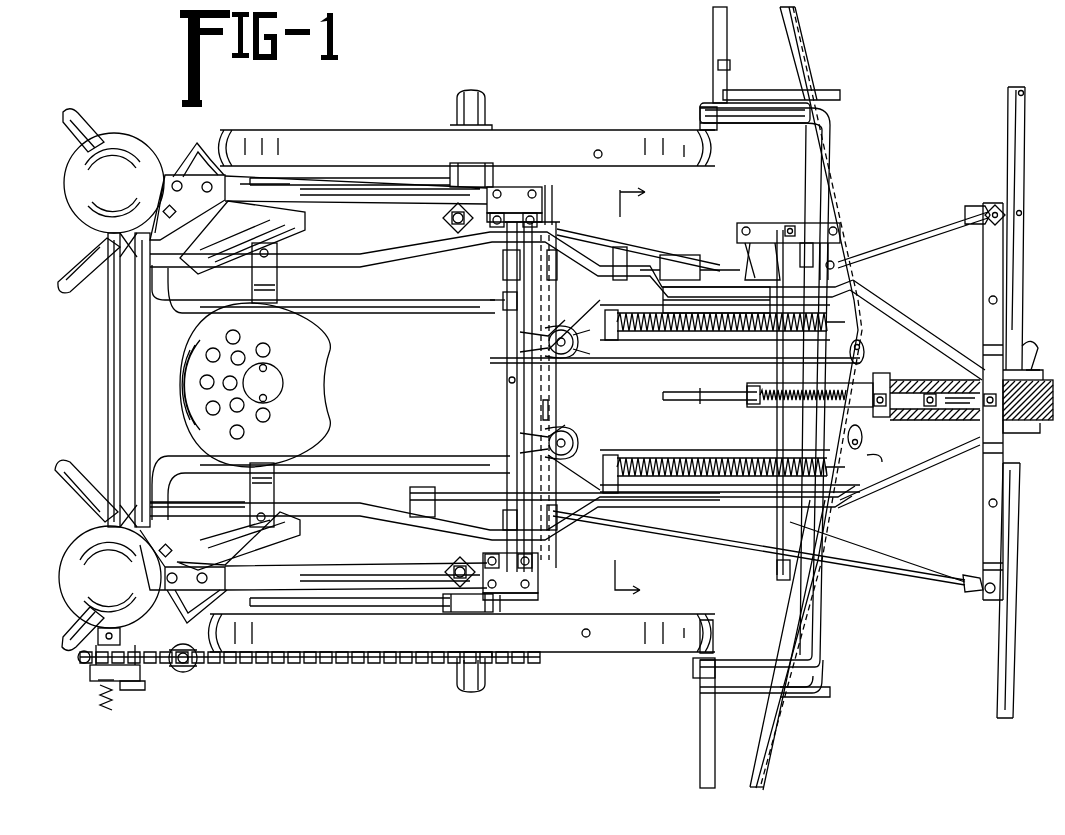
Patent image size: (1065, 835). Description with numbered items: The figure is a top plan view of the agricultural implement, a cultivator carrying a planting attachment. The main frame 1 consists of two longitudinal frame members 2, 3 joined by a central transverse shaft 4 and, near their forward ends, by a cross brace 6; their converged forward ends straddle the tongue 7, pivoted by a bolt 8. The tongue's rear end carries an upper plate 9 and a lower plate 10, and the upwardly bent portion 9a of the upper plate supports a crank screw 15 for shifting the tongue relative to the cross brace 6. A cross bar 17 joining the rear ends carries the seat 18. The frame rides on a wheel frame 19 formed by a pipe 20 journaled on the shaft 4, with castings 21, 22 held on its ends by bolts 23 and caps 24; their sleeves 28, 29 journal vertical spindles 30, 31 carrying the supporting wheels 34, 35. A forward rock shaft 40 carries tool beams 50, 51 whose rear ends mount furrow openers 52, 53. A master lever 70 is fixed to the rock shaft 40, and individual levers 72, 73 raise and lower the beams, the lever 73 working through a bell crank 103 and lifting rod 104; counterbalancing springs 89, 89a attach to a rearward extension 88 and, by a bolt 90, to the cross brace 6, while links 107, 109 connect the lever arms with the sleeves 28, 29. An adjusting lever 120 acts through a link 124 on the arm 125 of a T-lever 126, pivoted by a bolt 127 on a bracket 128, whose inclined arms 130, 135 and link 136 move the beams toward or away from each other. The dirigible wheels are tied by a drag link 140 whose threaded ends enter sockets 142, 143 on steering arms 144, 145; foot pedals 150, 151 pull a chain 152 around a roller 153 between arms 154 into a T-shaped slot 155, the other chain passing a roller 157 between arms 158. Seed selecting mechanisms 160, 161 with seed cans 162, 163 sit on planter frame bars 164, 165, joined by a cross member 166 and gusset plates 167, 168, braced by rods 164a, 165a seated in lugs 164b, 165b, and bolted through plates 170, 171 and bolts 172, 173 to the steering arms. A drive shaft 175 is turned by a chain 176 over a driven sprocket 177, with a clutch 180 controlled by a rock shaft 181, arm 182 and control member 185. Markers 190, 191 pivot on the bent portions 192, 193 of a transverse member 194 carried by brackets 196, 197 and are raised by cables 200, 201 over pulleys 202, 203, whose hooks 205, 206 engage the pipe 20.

The main frame 1 is at (373, 248).
The frame member 2 is at (322, 518).
The frame member 3 is at (320, 256).
The transverse shaft 4 is at (640, 395).
The cross brace 6 is at (880, 483).
The pole or tongue 7 is at (1040, 430).
The bolt 8 is at (1014, 370).
The upper plate 9 is at (907, 398).
The upwardly and rearwardly extending portion 9a is at (770, 386).
The lower plate 10 is at (861, 388).
The crank screw 15 is at (718, 393).
The cross bar 17 is at (277, 275).
The seat 18 is at (318, 366).
The wheel frame 19 is at (516, 396).
The pipe 20 is at (522, 430).
The casting 21 is at (490, 515).
The casting 22 is at (500, 262).
The bolts 23 is at (503, 300).
The caps 24 is at (561, 392).
The sleeve 28 is at (455, 558).
The sleeve 29 is at (445, 217).
The vertical spindle 30 is at (449, 570).
The vertical spindle 31 is at (448, 228).
The supporting wheel 34 is at (622, 645).
The supporting wheel 35 is at (576, 150).
The transverse rock shaft 40 is at (776, 572).
The tool beam 50 is at (352, 462).
The tool beam 51 is at (356, 318).
The furrow opener 52 is at (262, 548).
The furrow opener 53 is at (262, 225).
The master lever 70 is at (415, 488).
The lever 72 is at (690, 458).
The lever 73 is at (731, 336).
The rearward extension 88 is at (715, 447).
The counterbalancing spring 89 is at (730, 461).
The counterbalancing spring 89a is at (716, 332).
The bolt 90 is at (884, 457).
The bell crank 103 is at (668, 268).
The lifting rod 104 is at (594, 343).
The link 107 is at (672, 522).
The link 109 is at (585, 243).
The adjusting lever 120 is at (620, 250).
The link 124 is at (744, 228).
The arm 125 is at (862, 262).
The T-lever 126 is at (770, 228).
The bolt 127 is at (792, 225).
The bracket 128 is at (750, 258).
The downwardly inclined arm 130 is at (752, 220).
The opposite arm 135 is at (812, 225).
The link 136 is at (835, 260).
The drag link 140 is at (490, 302).
The socket 142 is at (540, 575).
The socket 143 is at (550, 205).
The steering arm 144 is at (525, 600).
The steering arm 145 is at (550, 180).
The foot pedal 150 is at (607, 454).
The foot pedal 151 is at (633, 335).
The chain 152 is at (567, 445).
The roller 153 is at (576, 447).
The arms 154 is at (567, 403).
The T-shaped slot 155 is at (548, 380).
The roller 157 is at (572, 354).
The arms 158 is at (548, 342).
The seed selecting mechanism 160 is at (57, 567).
The seed selecting mechanism 161 is at (59, 211).
The seed can 162 is at (95, 545).
The seed can 163 is at (72, 178).
The frame bar 164 is at (312, 588).
The brace rod 164a is at (330, 610).
The perforated lug 164b is at (448, 621).
The frame bar 165 is at (300, 198).
The brace rod 165a is at (318, 189).
The perforated lug 165b is at (462, 180).
The cross member 166 is at (138, 340).
The gusset plate 167 is at (250, 505).
The gusset plate 168 is at (178, 175).
The plate 170 is at (502, 605).
The plate 171 is at (547, 185).
The bolt 172 is at (497, 212).
The bolt 173 is at (530, 212).
The drive shaft 175 is at (110, 398).
The chain 176 is at (276, 664).
The driven sprocket 177 is at (78, 657).
The clutch mechanism 180 is at (96, 680).
The rock shaft 181 is at (155, 670).
The arm 182 is at (198, 500).
The control member 185 is at (130, 672).
The marker 190 is at (787, 776).
The marker 191 is at (806, 44).
The bent portion 192 is at (755, 666).
The bent portion 193 is at (772, 118).
The transversely disposed member 194 is at (828, 558).
The bracket 196 is at (835, 522).
The bracket 197 is at (848, 285).
The cable 200 is at (828, 585).
The cable 201 is at (822, 232).
The pulley 202 is at (864, 440).
The pulley 203 is at (865, 350).
The hook 205 is at (790, 440).
The hook 206 is at (511, 381).